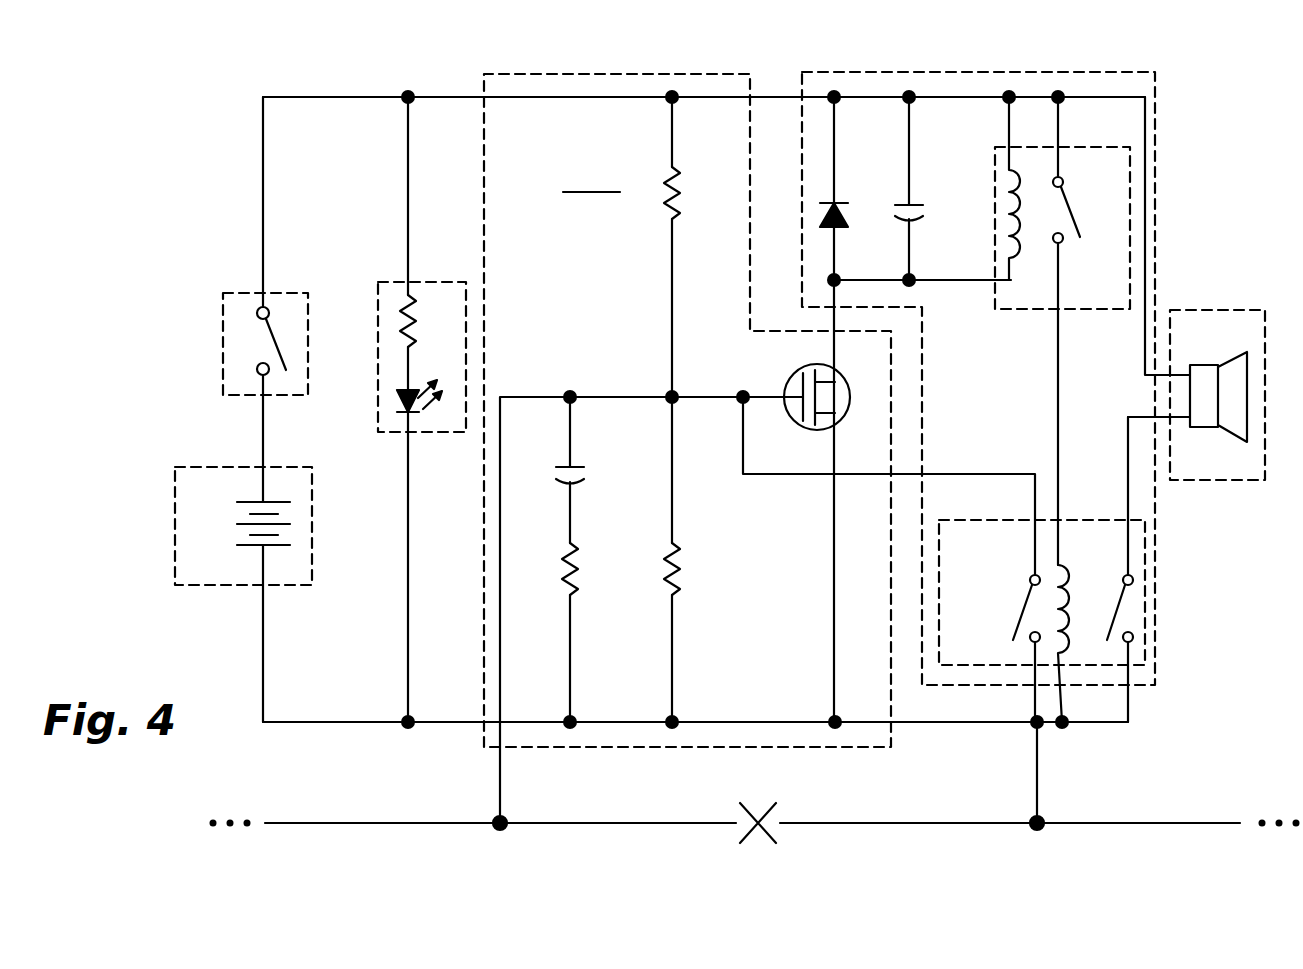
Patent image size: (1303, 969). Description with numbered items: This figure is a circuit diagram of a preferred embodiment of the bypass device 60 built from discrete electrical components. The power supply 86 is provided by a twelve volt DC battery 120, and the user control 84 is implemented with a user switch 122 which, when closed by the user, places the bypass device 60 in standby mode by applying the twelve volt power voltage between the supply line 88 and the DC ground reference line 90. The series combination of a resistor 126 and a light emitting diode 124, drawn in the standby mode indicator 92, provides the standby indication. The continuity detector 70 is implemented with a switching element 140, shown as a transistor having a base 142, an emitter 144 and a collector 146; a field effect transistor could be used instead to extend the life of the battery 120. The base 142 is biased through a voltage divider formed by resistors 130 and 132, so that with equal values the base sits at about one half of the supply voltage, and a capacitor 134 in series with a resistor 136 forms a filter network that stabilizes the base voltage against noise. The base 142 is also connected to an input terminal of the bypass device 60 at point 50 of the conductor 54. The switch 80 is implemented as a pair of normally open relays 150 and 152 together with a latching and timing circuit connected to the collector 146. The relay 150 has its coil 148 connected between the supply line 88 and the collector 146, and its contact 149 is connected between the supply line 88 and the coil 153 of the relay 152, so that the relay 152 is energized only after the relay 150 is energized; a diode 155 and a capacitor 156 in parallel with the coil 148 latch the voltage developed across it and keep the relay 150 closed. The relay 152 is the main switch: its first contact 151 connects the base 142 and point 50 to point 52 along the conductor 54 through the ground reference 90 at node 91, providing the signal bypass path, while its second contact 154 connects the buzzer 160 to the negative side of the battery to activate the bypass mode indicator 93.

The point 50 is at (494, 830).
The point 52 is at (1030, 828).
The conductor 54 is at (343, 825).
The bypass device 60 is at (591, 178).
The continuity detector 70 is at (535, 72).
The switch 80 is at (1157, 84).
The user control 84 is at (236, 295).
The power supply 86 is at (215, 467).
The supply line 88 is at (306, 96).
The DC ground reference line 90 is at (355, 722).
The node 91 is at (1033, 726).
The standby mode indicator 92 is at (378, 367).
The bypass mode indicator 93 is at (1265, 352).
The battery 120 is at (270, 548).
The user switch 122 is at (277, 300).
The light emitting diode 124 is at (412, 413).
The resistor 126 is at (418, 300).
The resistor 130 is at (679, 188).
The resistor 132 is at (680, 566).
The capacitor 134 is at (579, 466).
The resistor 136 is at (578, 566).
The switching element 140 is at (793, 419).
The base 142 is at (744, 390).
The emitter 144 is at (834, 497).
The collector 146 is at (834, 349).
The coil 148 is at (1021, 258).
The contact 149 is at (1064, 243).
The relay 150 is at (1040, 311).
The first contact 151 is at (1031, 612).
The relay 152 is at (1147, 638).
The coil 153 is at (1060, 567).
The second contact 154 is at (1120, 606).
The diode 155 is at (843, 203).
The capacitor 156 is at (926, 205).
The buzzer 160 is at (1203, 432).